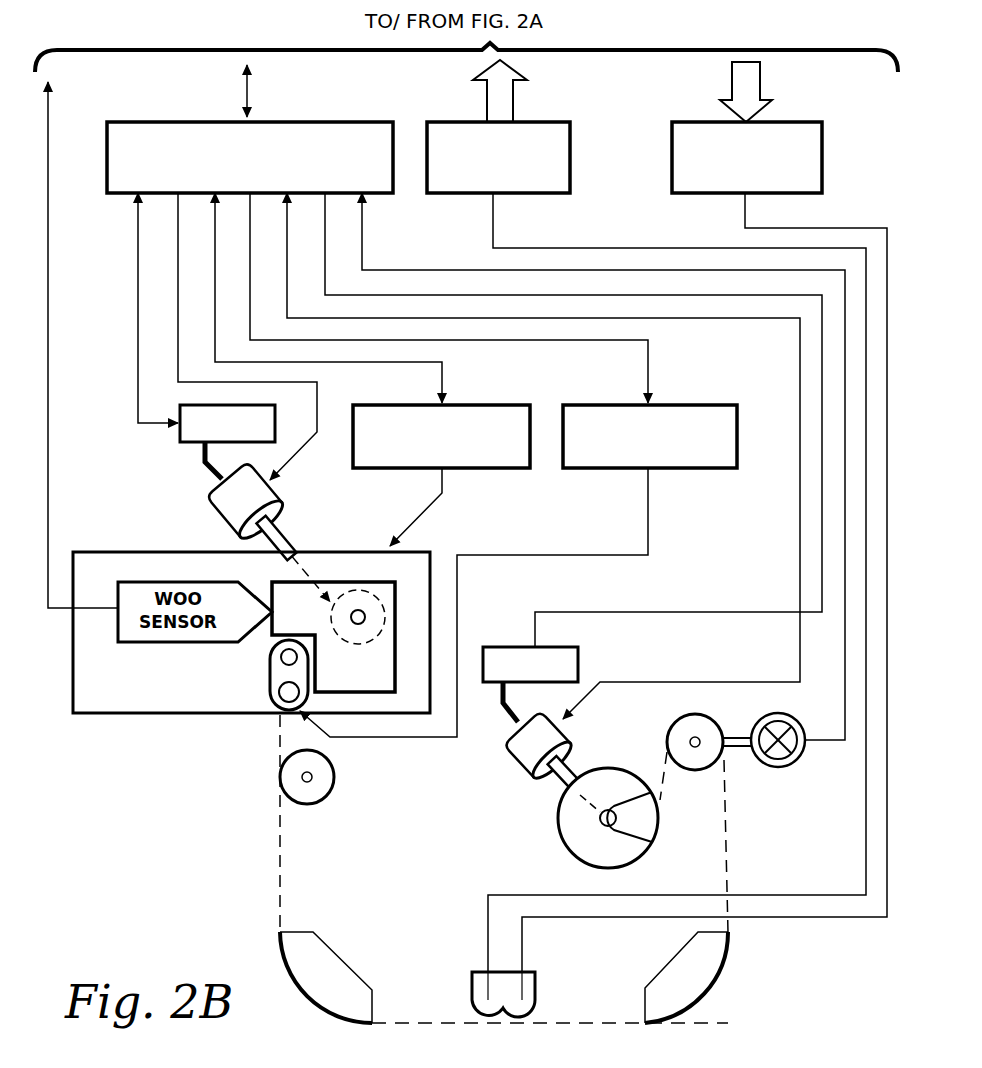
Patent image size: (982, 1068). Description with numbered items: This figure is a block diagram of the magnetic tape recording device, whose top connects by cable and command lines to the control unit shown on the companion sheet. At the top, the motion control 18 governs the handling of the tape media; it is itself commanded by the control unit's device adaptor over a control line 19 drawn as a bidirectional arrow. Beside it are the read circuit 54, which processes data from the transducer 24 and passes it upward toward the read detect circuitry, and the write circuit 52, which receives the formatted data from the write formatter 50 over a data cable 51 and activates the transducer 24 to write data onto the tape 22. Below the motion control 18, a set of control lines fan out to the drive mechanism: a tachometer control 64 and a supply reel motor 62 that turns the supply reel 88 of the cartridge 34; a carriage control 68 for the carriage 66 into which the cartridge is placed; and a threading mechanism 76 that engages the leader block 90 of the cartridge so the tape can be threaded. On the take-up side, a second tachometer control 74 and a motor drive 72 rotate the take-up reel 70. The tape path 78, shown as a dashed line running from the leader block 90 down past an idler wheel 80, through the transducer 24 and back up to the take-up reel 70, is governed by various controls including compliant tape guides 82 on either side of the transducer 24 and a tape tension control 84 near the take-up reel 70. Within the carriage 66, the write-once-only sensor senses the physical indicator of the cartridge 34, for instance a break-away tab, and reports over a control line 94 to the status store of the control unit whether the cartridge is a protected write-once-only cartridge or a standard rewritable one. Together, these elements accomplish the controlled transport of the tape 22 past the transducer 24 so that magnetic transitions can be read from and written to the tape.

The motion control 18 is at (324, 122).
The control line 19 is at (249, 89).
The tape 22 is at (333, 637).
The transducer 24 is at (536, 990).
The cartridge 34 is at (344, 585).
The write formatter 50 is at (510, 93).
The data cable 51 is at (758, 80).
The write circuit 52 is at (800, 122).
The read circuit 54 is at (553, 122).
The supply reel motor 62 is at (212, 505).
The tachometer control 64 is at (190, 447).
The carriage 66 is at (430, 560).
The carriage control 68 is at (477, 405).
The take-up reel 70 is at (568, 835).
The motor drive 72 is at (512, 768).
The tachometer control 74 is at (578, 660).
The threading mechanism 76 is at (688, 405).
The tape path 78 is at (278, 840).
The idler wheel 80 is at (316, 803).
The compliant tape guides 82 is at (333, 968).
The tape tension control 84 is at (765, 765).
The supply reel 88 is at (380, 643).
The leader block 90 is at (270, 692).
The control line 94 is at (50, 225).